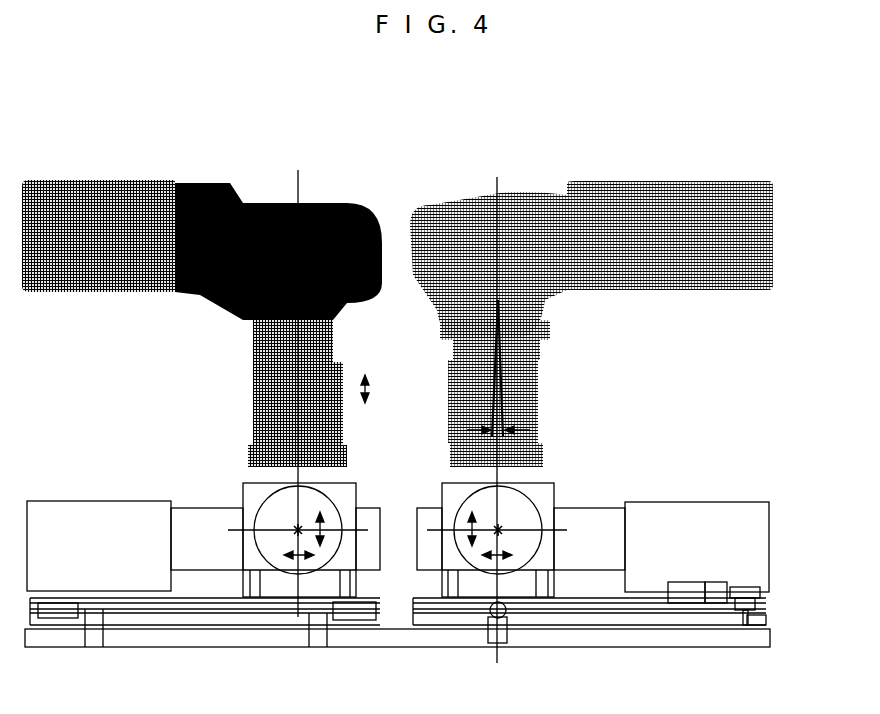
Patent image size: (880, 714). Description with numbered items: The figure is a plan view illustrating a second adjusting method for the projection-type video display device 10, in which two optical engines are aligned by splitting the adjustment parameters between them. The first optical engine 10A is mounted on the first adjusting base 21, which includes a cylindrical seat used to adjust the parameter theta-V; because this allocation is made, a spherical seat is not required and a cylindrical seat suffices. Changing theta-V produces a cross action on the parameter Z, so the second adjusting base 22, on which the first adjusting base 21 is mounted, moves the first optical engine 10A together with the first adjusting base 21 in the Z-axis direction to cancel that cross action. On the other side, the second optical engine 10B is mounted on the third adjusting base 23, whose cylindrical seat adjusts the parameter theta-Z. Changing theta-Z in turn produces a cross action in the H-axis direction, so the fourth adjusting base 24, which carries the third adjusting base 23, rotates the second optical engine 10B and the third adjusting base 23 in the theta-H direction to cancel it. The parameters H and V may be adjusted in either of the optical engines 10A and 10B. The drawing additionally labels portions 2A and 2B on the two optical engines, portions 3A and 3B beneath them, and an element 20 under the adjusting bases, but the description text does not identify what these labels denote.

The projection-type video display device 10 is at (404, 133).
The first optical engine 10A is at (207, 150).
The second optical engine 10B is at (652, 151).
The first camera body 2A is at (243, 306).
The second camera body 2B is at (500, 283).
The first adjustment stage 3A is at (262, 503).
The second adjustment stage 3B is at (523, 502).
The base plate 20 is at (770, 640).
The first adjusting base 21 is at (163, 602).
The second adjusting base 22 is at (237, 618).
The third adjusting base 23 is at (547, 603).
The fourth adjusting base 24 is at (598, 618).